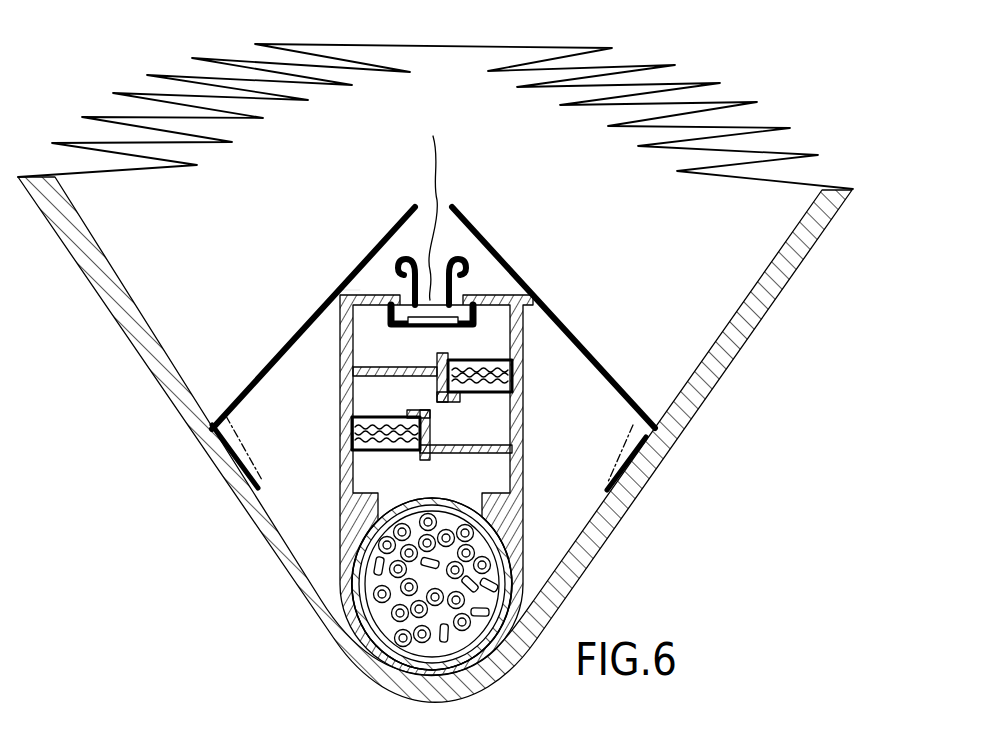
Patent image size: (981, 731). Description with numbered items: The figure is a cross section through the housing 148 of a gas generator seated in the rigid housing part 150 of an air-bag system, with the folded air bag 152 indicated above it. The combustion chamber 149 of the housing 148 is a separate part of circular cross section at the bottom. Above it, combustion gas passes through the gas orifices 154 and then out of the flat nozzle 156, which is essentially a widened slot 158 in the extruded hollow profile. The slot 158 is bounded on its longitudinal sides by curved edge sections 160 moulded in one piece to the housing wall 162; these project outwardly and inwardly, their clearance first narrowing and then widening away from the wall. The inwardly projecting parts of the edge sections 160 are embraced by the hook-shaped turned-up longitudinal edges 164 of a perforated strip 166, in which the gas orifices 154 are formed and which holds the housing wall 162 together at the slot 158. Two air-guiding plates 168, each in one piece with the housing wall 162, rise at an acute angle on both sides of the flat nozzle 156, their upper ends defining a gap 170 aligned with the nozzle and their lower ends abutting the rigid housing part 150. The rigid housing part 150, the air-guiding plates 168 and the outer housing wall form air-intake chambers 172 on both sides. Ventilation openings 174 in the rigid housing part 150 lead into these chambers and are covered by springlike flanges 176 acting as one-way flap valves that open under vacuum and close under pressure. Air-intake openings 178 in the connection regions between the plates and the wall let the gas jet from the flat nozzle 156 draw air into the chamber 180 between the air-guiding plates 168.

The housing 148 is at (498, 208).
The combustion chamber 149 is at (433, 487).
The rigid housing part 150 is at (733, 352).
The folded air bag 152 is at (633, 63).
The gas orifices 154 is at (342, 362).
The flat nozzle 156 is at (447, 235).
The slot 158 is at (400, 237).
The curved edge sections 160 is at (400, 262).
The housing wall 162 is at (516, 402).
The turned-up longitudinal edges 164 is at (390, 322).
The perforated strip 166 is at (430, 340).
The air-guiding plates 168 is at (385, 242).
The gap 170 is at (448, 205).
The air-intake chambers 172 is at (320, 492).
The ventilation openings 174 is at (213, 458).
The flanges 176 is at (245, 482).
The air-intake openings 178 is at (343, 291).
The chamber 180 is at (423, 230).